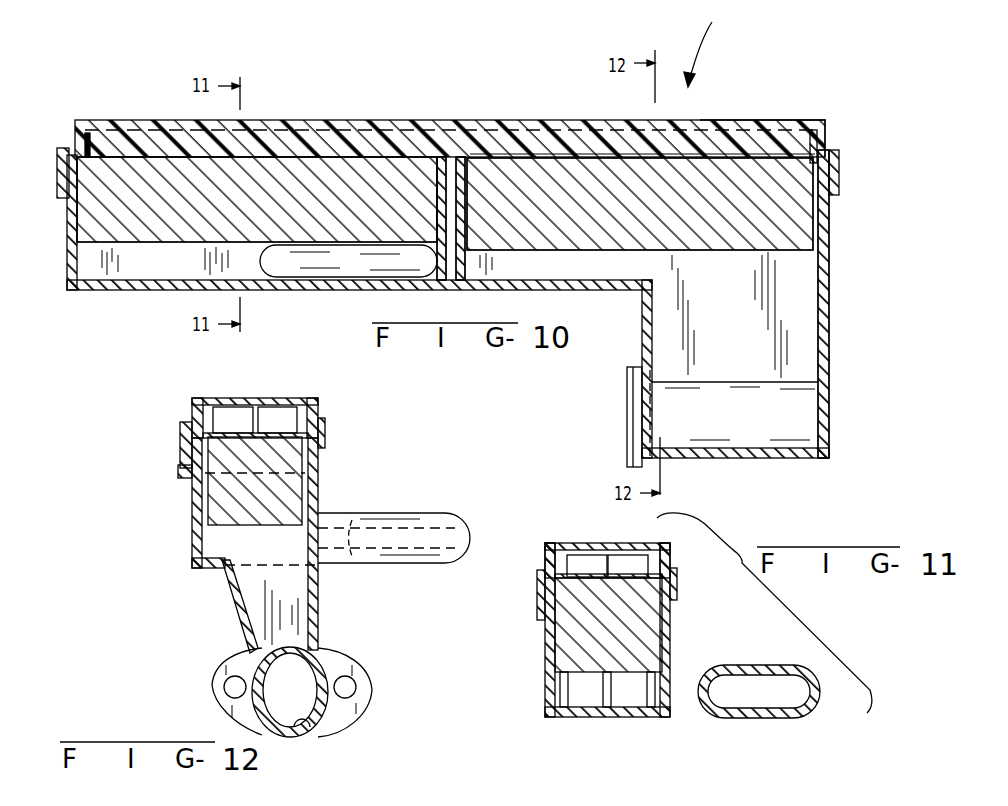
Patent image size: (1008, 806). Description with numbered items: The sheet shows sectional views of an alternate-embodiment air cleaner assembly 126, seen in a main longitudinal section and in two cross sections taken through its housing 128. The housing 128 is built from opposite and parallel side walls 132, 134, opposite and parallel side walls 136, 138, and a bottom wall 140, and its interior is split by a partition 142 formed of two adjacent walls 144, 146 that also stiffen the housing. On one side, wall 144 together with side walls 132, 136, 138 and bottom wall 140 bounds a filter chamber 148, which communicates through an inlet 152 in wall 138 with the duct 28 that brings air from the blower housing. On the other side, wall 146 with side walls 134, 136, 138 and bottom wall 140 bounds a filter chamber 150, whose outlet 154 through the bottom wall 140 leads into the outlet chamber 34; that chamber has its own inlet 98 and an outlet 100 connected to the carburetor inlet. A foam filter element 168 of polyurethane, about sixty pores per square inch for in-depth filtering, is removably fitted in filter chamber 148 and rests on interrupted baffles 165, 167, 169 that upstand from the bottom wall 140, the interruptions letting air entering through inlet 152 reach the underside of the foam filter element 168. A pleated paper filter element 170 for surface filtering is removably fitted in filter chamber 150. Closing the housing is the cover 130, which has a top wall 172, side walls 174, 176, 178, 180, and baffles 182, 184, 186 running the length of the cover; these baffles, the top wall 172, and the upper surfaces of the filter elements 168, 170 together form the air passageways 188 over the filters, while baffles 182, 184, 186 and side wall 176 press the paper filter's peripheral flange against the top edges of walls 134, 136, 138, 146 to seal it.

In FIG. 11, the duct 28 is at (775, 665).
In FIG. 12, the duct 28 is at (400, 515).
In FIG. 10, the outlet chamber 34 is at (829, 420).
In FIG. 10, the inlet 98 is at (830, 300).
In FIG. 10, the outlet 100 is at (628, 412).
In FIG. 12, the outlet 100 is at (318, 722).
In FIG. 10, the air cleaner assembly 126 is at (712, 43).
In FIG. 10, the housing 128 is at (822, 147).
In FIG. 12, the housing 128 is at (190, 486).
In FIG. 10, the cover 130 is at (693, 120).
In FIG. 10, the side wall 132 is at (65, 227).
In FIG. 10, the side wall 134 is at (830, 230).
In FIG. 11, the side wall 136 is at (670, 622).
In FIG. 12, the side wall 136 is at (192, 500).
In FIG. 11, the side wall 138 is at (545, 636).
In FIG. 12, the side wall 138 is at (318, 500).
In FIG. 10, the bottom wall 140 is at (477, 288).
In FIG. 12, the bottom wall 140 is at (200, 570).
In FIG. 10, the interior partition 142 is at (455, 262).
In FIG. 10, the wall 144 is at (430, 203).
In FIG. 10, the wall 146 is at (462, 197).
In FIG. 10, the filter chamber 148 is at (273, 204).
In FIG. 10, the filter chamber 150 is at (633, 204).
In FIG. 10, the inlet 152 is at (322, 248).
In FIG. 12, the inlet 152 is at (312, 537).
In FIG. 10, the outlet 154 is at (660, 283).
In FIG. 11, the interrupted baffle 165 is at (562, 690).
In FIG. 11, the interrupted baffle 167 is at (612, 692).
In FIG. 11, the interrupted baffle 169 is at (650, 692).
In FIG. 10, the foam filter element 168 is at (315, 167).
In FIG. 11, the foam filter element 168 is at (622, 649).
In FIG. 10, the paper filter element 170 is at (533, 173).
In FIG. 12, the paper filter element 170 is at (275, 514).
In FIG. 10, the top wall 172 is at (120, 120).
In FIG. 11, the top wall 172 is at (578, 543).
In FIG. 12, the top wall 172 is at (233, 398).
In FIG. 10, the side wall 174 is at (57, 160).
In FIG. 10, the side wall 176 is at (839, 178).
In FIG. 11, the side wall 178 is at (672, 572).
In FIG. 12, the side wall 178 is at (322, 414).
In FIG. 11, the side wall 180 is at (538, 572).
In FIG. 12, the side wall 180 is at (180, 432).
In FIG. 11, the baffle 182 is at (637, 575).
In FIG. 12, the baffle 182 is at (284, 400).
In FIG. 11, the baffle 184 is at (607, 577).
In FIG. 12, the baffle 184 is at (268, 410).
In FIG. 11, the baffle 186 is at (570, 557).
In FIG. 12, the baffle 186 is at (195, 407).
In FIG. 11, the air passageways 188 is at (608, 594).
In FIG. 12, the air passageways 188 is at (238, 426).